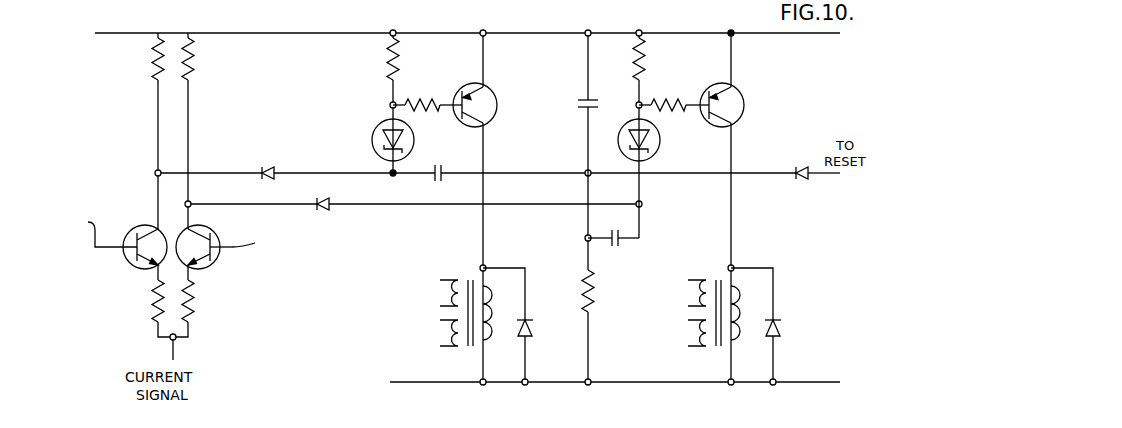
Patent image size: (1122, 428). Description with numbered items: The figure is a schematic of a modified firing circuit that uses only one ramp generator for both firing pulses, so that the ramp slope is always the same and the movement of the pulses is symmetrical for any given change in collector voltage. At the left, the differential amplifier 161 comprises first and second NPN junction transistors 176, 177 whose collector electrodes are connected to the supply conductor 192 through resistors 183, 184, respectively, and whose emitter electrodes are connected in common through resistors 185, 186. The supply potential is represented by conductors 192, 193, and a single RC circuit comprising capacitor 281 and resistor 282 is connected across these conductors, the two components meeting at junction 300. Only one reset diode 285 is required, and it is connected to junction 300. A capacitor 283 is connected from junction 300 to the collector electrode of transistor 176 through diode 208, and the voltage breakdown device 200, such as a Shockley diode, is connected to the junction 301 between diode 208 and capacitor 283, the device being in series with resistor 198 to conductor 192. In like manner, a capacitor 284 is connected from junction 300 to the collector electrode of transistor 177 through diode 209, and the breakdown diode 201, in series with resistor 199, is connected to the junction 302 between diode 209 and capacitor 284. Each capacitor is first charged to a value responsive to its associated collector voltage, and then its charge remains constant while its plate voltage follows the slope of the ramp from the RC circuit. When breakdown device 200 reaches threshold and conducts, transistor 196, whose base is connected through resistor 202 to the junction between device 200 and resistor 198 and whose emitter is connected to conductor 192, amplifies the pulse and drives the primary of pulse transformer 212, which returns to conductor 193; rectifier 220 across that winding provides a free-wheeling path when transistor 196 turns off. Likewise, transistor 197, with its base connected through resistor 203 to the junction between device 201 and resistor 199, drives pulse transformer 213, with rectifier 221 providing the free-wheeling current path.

The differential amplifier 161 is at (138, 345).
The first NPN junction type transistor 176 is at (126, 262).
The second NPN junction type transistor 177 is at (237, 294).
The resistor 183 is at (152, 71).
The resistor 184 is at (194, 71).
The resistor 185 is at (152, 305).
The resistor 186 is at (190, 308).
The conductor 192 is at (302, 33).
The conductor 193 is at (650, 383).
The transistor 196 is at (531, 81).
The transistor 197 is at (775, 81).
The resistor 198 is at (390, 68).
The resistor 199 is at (648, 66).
The voltage breakdown device 200 is at (372, 140).
The voltage breakdown device 201 is at (659, 145).
The resistor 202 is at (426, 97).
The resistor 203 is at (676, 97).
The diode 208 is at (268, 166).
The diode 209 is at (323, 210).
The pulse transformer 212 is at (466, 270).
The pulse transformer 213 is at (716, 270).
The rectifier 220 is at (534, 327).
The rectifier 221 is at (780, 327).
The capacitor 281 is at (579, 107).
The resistor 282 is at (594, 285).
The capacitor 283 is at (438, 165).
The capacitor 284 is at (615, 246).
The reset diode 285 is at (803, 180).
The junction 300 is at (584, 171).
The junction 301 is at (390, 177).
The junction 302 is at (641, 208).